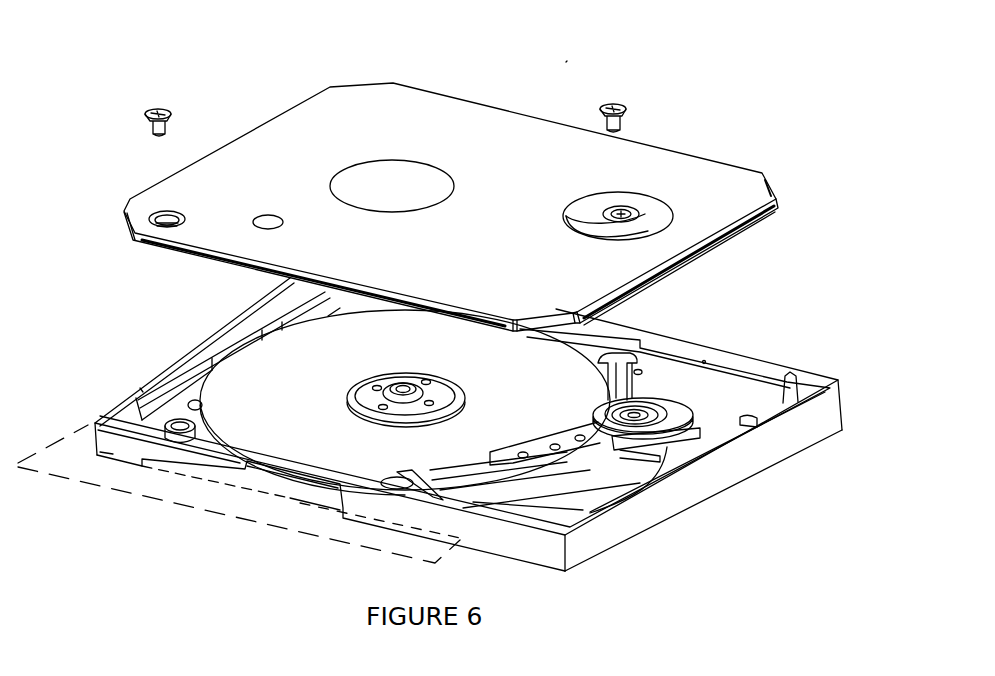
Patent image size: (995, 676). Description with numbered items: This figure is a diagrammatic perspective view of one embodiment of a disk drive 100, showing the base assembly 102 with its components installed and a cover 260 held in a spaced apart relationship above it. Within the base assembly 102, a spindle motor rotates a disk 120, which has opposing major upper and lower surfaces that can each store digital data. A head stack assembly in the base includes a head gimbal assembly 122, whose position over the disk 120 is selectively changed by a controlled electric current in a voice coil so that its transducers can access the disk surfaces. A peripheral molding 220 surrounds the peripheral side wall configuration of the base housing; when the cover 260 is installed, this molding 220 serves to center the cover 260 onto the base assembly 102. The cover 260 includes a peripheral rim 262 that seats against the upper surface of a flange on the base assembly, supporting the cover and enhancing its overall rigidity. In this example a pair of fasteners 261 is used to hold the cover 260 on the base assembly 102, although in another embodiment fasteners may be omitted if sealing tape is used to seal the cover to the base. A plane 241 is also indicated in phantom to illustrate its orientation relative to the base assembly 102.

The drive 100 is at (571, 48).
The base assembly 102 is at (714, 516).
The disk 120 is at (483, 373).
The head gimbal assembly 122 is at (590, 412).
The peripheral molding 220 is at (820, 445).
The plane 241 is at (120, 491).
The cover 260 is at (762, 174).
The fasteners 261 is at (170, 109).
The peripheral rim 262 is at (740, 233).